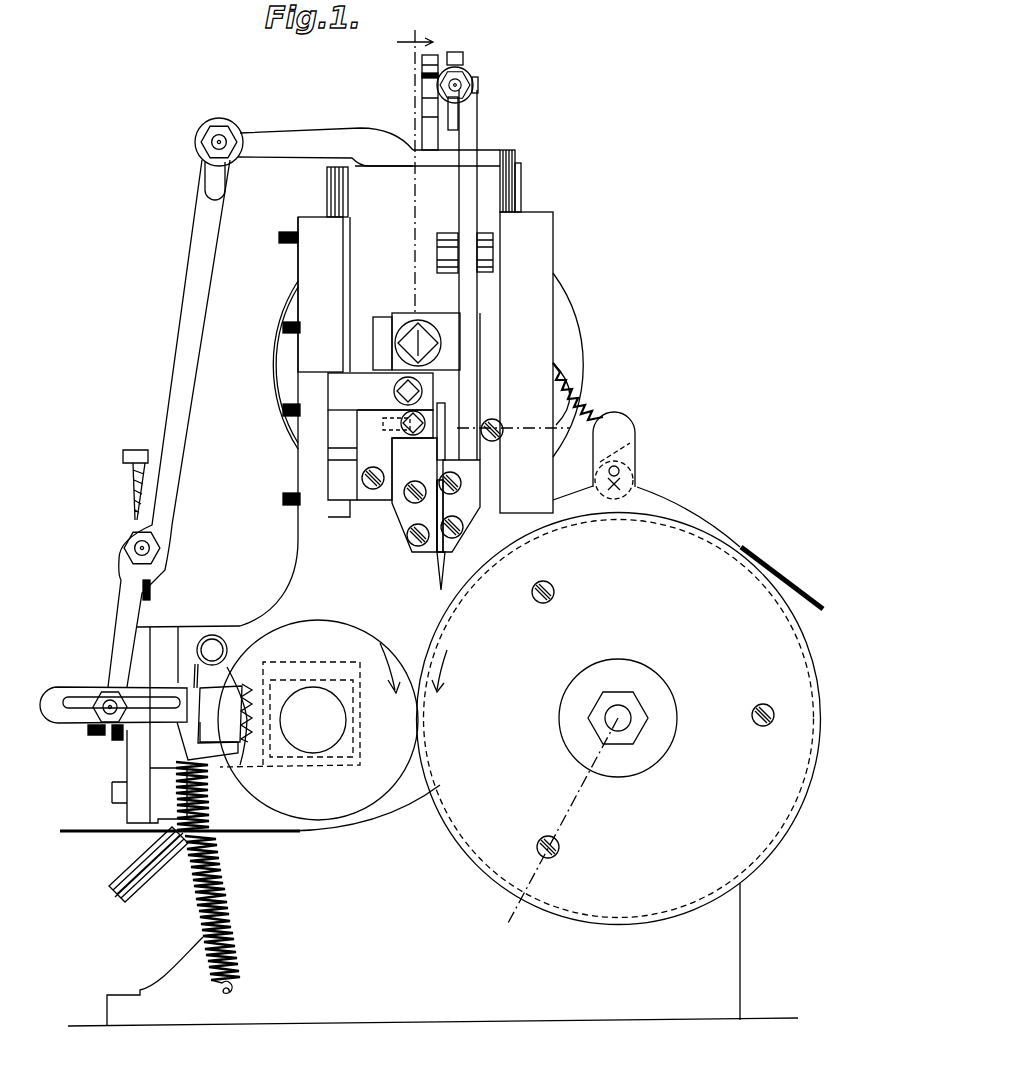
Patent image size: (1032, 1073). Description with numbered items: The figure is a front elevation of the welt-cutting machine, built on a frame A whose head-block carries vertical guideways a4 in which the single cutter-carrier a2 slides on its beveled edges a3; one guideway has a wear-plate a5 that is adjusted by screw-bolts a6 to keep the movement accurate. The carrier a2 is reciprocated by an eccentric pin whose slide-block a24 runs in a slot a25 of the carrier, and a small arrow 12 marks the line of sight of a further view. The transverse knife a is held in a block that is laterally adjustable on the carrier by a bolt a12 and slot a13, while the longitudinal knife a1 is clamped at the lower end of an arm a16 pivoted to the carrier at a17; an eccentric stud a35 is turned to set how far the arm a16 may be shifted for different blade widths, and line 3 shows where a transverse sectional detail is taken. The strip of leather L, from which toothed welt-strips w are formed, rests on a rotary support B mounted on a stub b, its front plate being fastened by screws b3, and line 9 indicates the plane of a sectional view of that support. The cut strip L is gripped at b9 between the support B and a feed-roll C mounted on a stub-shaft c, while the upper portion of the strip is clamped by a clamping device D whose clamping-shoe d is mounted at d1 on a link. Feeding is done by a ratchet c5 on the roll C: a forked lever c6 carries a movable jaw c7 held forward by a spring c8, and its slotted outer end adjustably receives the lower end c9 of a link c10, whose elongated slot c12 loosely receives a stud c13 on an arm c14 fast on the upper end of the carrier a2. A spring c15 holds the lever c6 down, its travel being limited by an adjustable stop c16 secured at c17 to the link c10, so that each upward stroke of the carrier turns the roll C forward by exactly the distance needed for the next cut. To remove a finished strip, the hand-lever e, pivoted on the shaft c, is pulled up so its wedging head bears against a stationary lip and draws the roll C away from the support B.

The frame A is at (433, 588).
The direction arrow 12 is at (415, 160).
The cutter-carrier a2 is at (487, 193).
The beveled edges a3 is at (520, 202).
The arm a16 is at (468, 385).
The pivot of arm a17 is at (437, 250).
The vertical guideways a4 is at (313, 283).
The wear-plate a5 is at (297, 217).
The screw-bolts a6 is at (280, 237).
The slot a25 is at (380, 317).
The slide-block a24 is at (428, 312).
The bolt a12 is at (400, 398).
The slot a13 is at (398, 424).
The eccentric stud a35 is at (495, 424).
The section line 3 is at (556, 425).
The transverse cutter a is at (435, 565).
The longitudinal cutter a1 is at (447, 577).
The clamping device D is at (610, 456).
The shoe mounting d1 is at (636, 463).
The clamping-shoe d is at (655, 497).
The strip of leather L is at (777, 578).
The rotary support B is at (619, 719).
The stub b is at (622, 723).
The holding point b9 is at (417, 718).
The screws b3 is at (760, 705).
The section line 9 is at (557, 834).
The feed-roll C is at (393, 785).
The stub-shaft c is at (326, 745).
The link c10 is at (168, 397).
The stud c13 is at (215, 135).
The elongated slot c12 is at (207, 180).
The arm c14 is at (322, 140).
The stop fastening c17 is at (125, 545).
The adjustable stop c16 is at (153, 588).
The lower end of link c9 is at (108, 716).
The forked lever c6 is at (187, 680).
The spring c8 is at (212, 636).
The movable jaw c7 is at (210, 692).
The ratchet c5 is at (234, 687).
The welt-strip w is at (110, 833).
The spring c15 is at (220, 873).
The hand-lever e is at (123, 907).